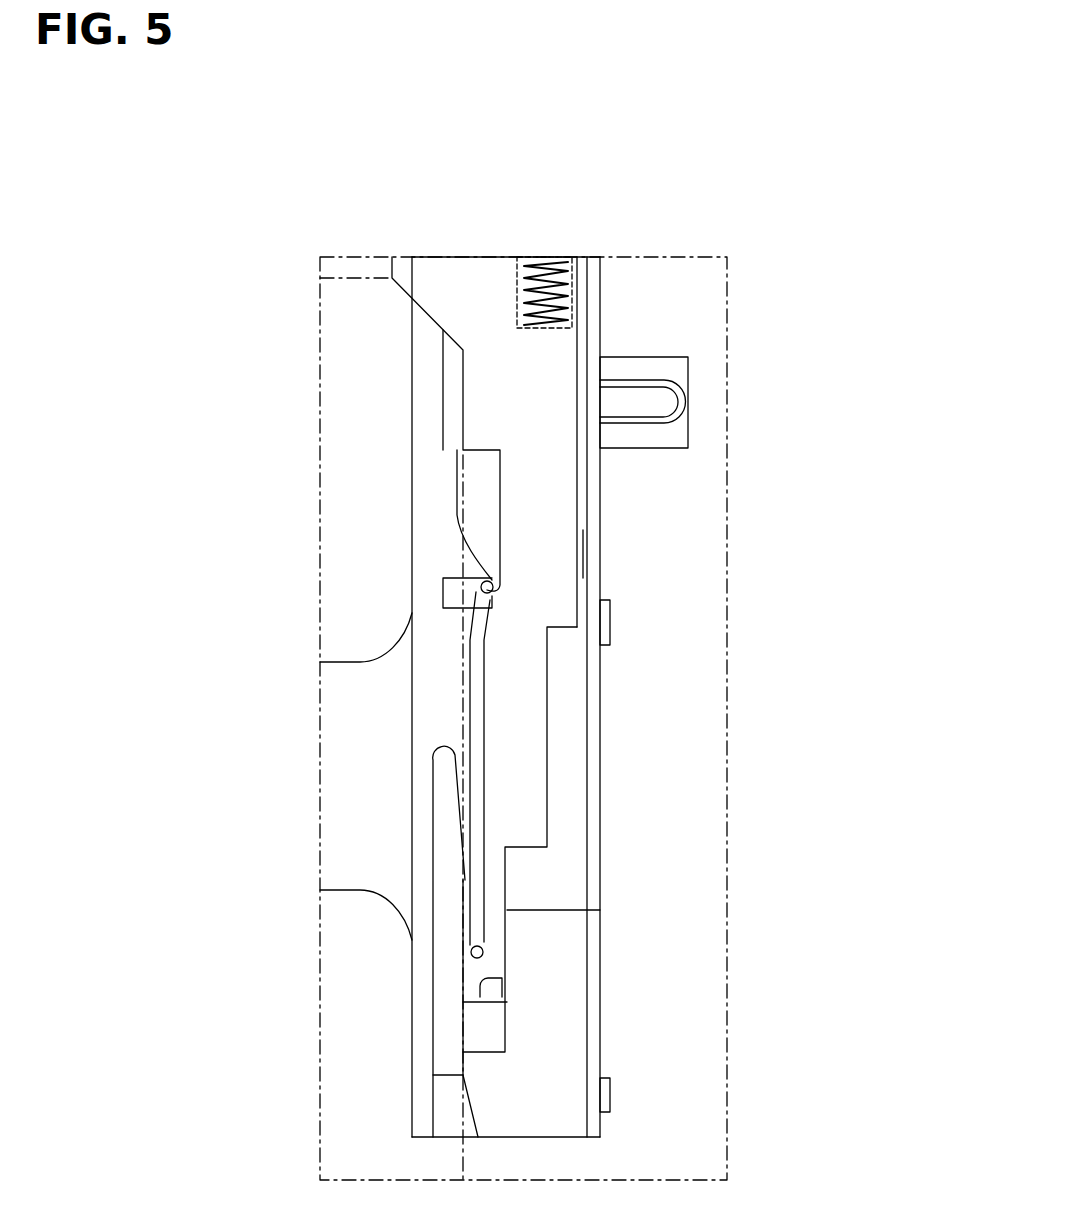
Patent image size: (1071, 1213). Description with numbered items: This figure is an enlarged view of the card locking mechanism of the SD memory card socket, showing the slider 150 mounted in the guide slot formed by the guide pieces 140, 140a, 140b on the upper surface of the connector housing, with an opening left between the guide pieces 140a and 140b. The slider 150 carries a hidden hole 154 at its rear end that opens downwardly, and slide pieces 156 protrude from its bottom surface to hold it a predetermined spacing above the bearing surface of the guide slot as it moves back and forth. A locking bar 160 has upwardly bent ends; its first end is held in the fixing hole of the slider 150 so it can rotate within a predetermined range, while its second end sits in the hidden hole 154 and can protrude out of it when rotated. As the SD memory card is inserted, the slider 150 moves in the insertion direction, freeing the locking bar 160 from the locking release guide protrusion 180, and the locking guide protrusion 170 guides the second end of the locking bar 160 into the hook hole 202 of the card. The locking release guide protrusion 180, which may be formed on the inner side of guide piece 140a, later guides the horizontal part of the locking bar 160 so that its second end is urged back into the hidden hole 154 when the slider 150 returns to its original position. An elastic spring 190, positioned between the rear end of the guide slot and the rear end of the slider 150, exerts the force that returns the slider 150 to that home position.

The guide piece 140 is at (583, 478).
The guide piece 140a is at (440, 985).
The guide piece 140b is at (455, 408).
The slider 150 is at (577, 582).
The hidden hole 154 is at (487, 610).
The slide pieces 156 is at (495, 993).
The locking bar 160 is at (480, 800).
The locking guide protrusion 170 is at (497, 580).
The locking release guide protrusion 180 is at (468, 972).
The elastic spring 190 is at (540, 255).
The hook hole 202 is at (450, 600).